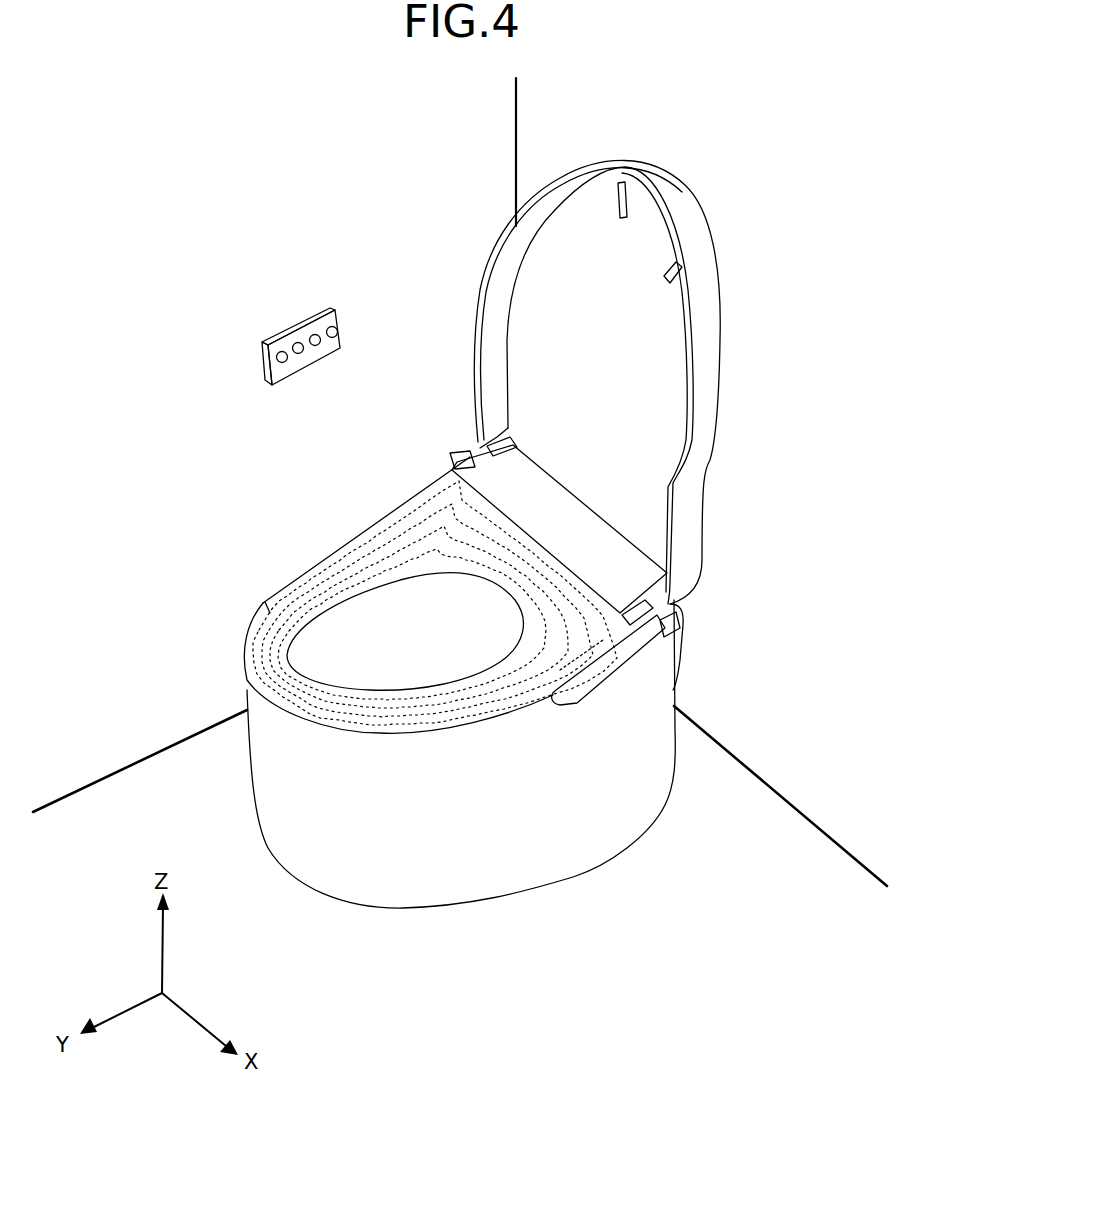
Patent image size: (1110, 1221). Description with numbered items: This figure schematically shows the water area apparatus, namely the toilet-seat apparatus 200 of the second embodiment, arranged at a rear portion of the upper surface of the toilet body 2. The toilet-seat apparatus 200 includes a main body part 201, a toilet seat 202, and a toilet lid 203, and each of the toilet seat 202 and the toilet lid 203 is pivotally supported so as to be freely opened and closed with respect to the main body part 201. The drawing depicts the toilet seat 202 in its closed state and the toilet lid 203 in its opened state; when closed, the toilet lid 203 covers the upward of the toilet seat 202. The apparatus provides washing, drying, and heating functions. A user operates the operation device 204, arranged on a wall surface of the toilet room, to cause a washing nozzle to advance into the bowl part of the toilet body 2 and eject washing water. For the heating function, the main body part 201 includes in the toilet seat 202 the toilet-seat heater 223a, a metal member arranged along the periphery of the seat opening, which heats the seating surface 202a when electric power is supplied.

The toilet body 2 is at (236, 756).
The water area apparatus (toilet-seat apparatus) 200 is at (394, 475).
The main body part 201 is at (660, 657).
The toilet seat 202 is at (348, 543).
The seating surface 202a is at (303, 578).
The toilet lid 203 is at (718, 373).
The operation device 204 is at (343, 328).
The heater (toilet-seat heater) 223a is at (268, 600).